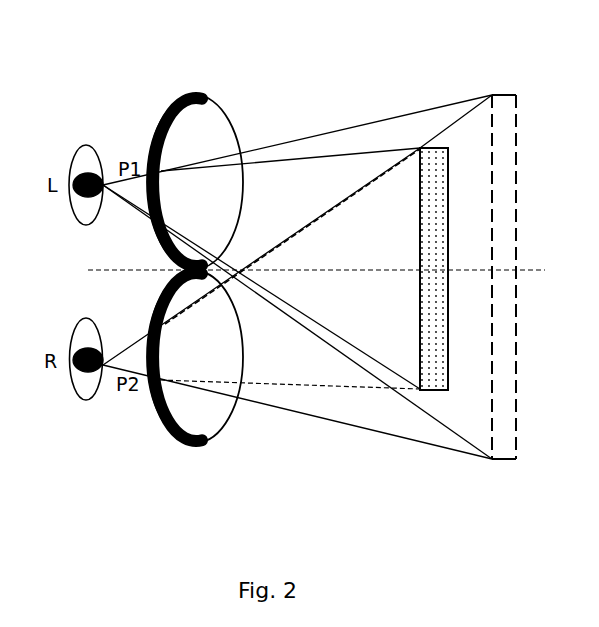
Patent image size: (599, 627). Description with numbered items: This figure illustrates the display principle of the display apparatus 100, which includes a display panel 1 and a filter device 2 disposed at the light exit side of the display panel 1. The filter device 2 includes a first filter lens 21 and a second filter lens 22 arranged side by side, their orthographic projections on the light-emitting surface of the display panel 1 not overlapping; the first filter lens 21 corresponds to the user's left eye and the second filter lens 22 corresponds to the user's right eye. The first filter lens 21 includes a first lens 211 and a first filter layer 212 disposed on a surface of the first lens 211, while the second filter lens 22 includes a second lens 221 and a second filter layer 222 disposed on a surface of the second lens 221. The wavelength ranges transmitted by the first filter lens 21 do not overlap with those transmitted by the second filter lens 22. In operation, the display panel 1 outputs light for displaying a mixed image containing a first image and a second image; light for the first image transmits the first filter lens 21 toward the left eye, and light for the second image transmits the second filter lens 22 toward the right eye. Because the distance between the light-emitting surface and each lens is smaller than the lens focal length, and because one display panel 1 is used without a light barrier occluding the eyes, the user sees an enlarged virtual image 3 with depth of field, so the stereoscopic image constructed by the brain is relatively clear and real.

The display panel 1 is at (435, 390).
The filter device 2 is at (259, 370).
The virtual image 3 is at (492, 459).
The first filter lens 21 is at (233, 58).
The second filter lens 22 is at (255, 488).
The first lens 211 is at (233, 117).
The first filter layer 212 is at (163, 113).
The second lens 221 is at (229, 420).
The second filter layer 222 is at (163, 423).
The display apparatus 100 is at (445, 526).